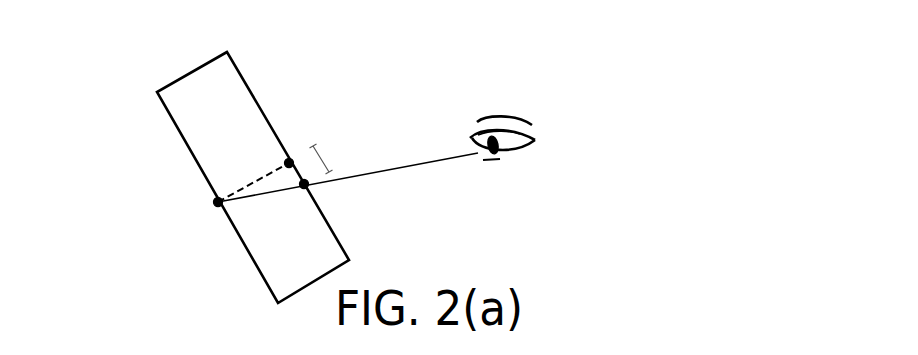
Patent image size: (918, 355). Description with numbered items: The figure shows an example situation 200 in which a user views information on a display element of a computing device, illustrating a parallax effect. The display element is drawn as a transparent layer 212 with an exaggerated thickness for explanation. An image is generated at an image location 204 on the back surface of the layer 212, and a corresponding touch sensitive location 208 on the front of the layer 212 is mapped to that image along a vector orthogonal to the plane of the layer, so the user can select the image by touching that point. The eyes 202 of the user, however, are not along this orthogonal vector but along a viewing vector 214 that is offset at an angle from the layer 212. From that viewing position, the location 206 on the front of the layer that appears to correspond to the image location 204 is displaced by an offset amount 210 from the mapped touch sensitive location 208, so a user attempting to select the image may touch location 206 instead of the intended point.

The example situation 200 is at (785, 115).
The eyes 202 is at (553, 135).
The image location 204 is at (218, 202).
The perceived front location 206 is at (305, 183).
The touch sensitive location 208 is at (289, 163).
The offset amount 210 is at (330, 167).
The transparent layer 212 is at (177, 80).
The viewing vector 214 is at (458, 157).